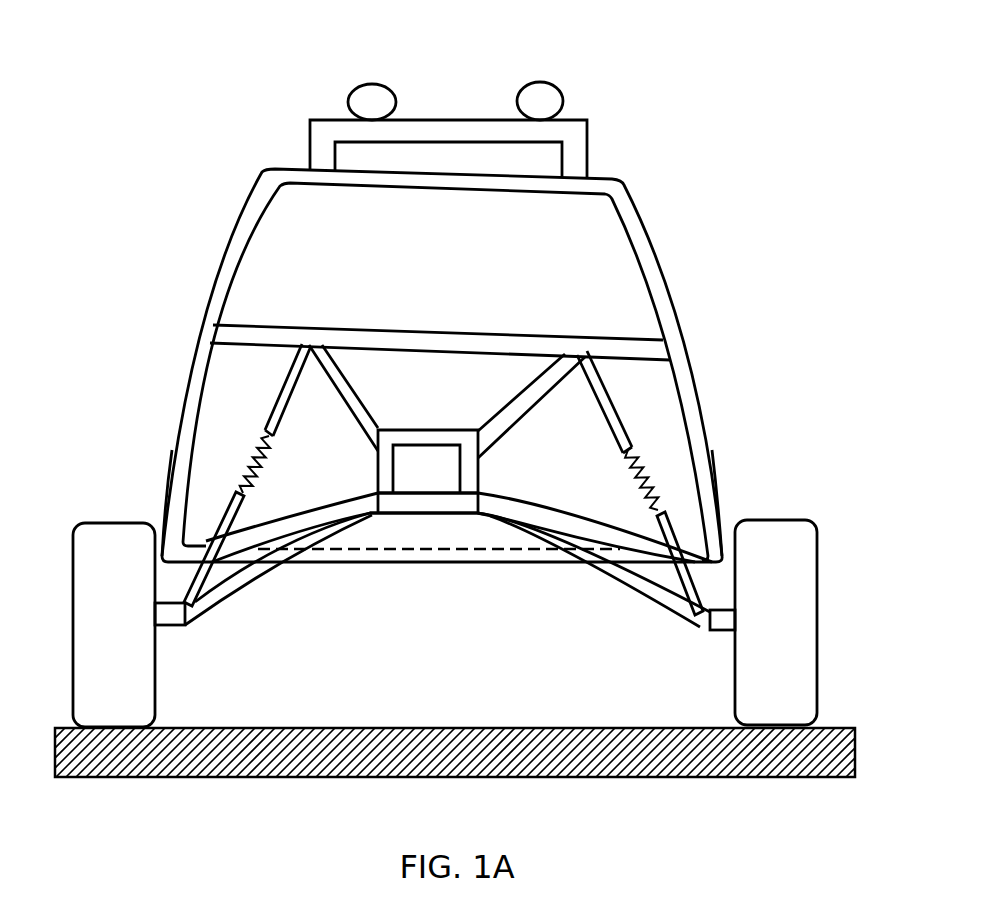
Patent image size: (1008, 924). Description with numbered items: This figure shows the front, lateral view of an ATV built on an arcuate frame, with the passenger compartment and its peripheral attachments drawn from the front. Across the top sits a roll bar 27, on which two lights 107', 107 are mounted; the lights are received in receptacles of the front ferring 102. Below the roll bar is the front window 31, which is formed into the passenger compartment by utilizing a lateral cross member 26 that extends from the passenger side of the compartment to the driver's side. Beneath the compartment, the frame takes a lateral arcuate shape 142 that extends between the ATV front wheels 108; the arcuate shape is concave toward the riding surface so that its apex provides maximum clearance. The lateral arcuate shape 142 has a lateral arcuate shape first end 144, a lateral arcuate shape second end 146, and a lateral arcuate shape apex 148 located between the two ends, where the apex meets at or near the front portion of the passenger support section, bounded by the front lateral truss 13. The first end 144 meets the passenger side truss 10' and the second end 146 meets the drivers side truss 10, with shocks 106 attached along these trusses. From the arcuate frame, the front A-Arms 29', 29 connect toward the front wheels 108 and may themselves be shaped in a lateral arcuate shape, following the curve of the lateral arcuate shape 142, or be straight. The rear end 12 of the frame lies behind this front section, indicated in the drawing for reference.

The light 107' is at (403, 74).
The light 107 is at (563, 74).
The roll bar 27 is at (473, 132).
The front window 31 is at (390, 261).
The lateral cross member 26 is at (478, 324).
The shocks 106 is at (603, 398).
The lateral arcuate shape first end 144 is at (180, 550).
The lateral arcuate shape second end 146 is at (703, 565).
The wheel 108 is at (778, 542).
The lateral arcuate shape apex 148 is at (430, 503).
The front lateral truss 13 is at (403, 503).
The lateral arcuate shape 142 is at (363, 513).
The rear end 12 is at (547, 557).
The front ferring 102 is at (470, 520).
The passenger side truss 10' is at (230, 577).
The drivers side truss 10 is at (652, 587).
The front A-Arm 29' is at (201, 652).
The front A-Arm 29 is at (698, 658).